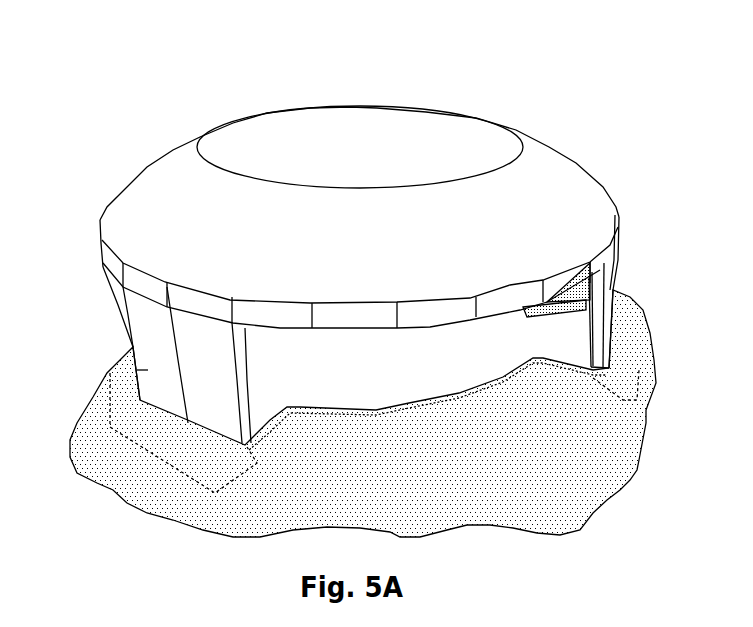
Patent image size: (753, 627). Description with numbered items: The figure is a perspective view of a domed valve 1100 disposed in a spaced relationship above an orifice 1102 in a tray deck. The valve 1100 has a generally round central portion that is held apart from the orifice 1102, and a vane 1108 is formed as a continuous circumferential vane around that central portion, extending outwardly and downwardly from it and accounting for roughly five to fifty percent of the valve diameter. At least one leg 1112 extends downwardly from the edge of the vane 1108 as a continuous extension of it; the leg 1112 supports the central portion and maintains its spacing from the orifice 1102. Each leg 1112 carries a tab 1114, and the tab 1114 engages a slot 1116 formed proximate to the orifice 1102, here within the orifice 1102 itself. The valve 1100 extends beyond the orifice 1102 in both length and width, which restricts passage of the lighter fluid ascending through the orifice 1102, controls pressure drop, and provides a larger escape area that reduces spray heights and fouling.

The valve 1100 is at (556, 46).
The orifice 1102 is at (398, 380).
The vane 1108 is at (409, 284).
The leg 1112 is at (103, 372).
The tab 1114 is at (115, 372).
The slot 1116 is at (273, 420).